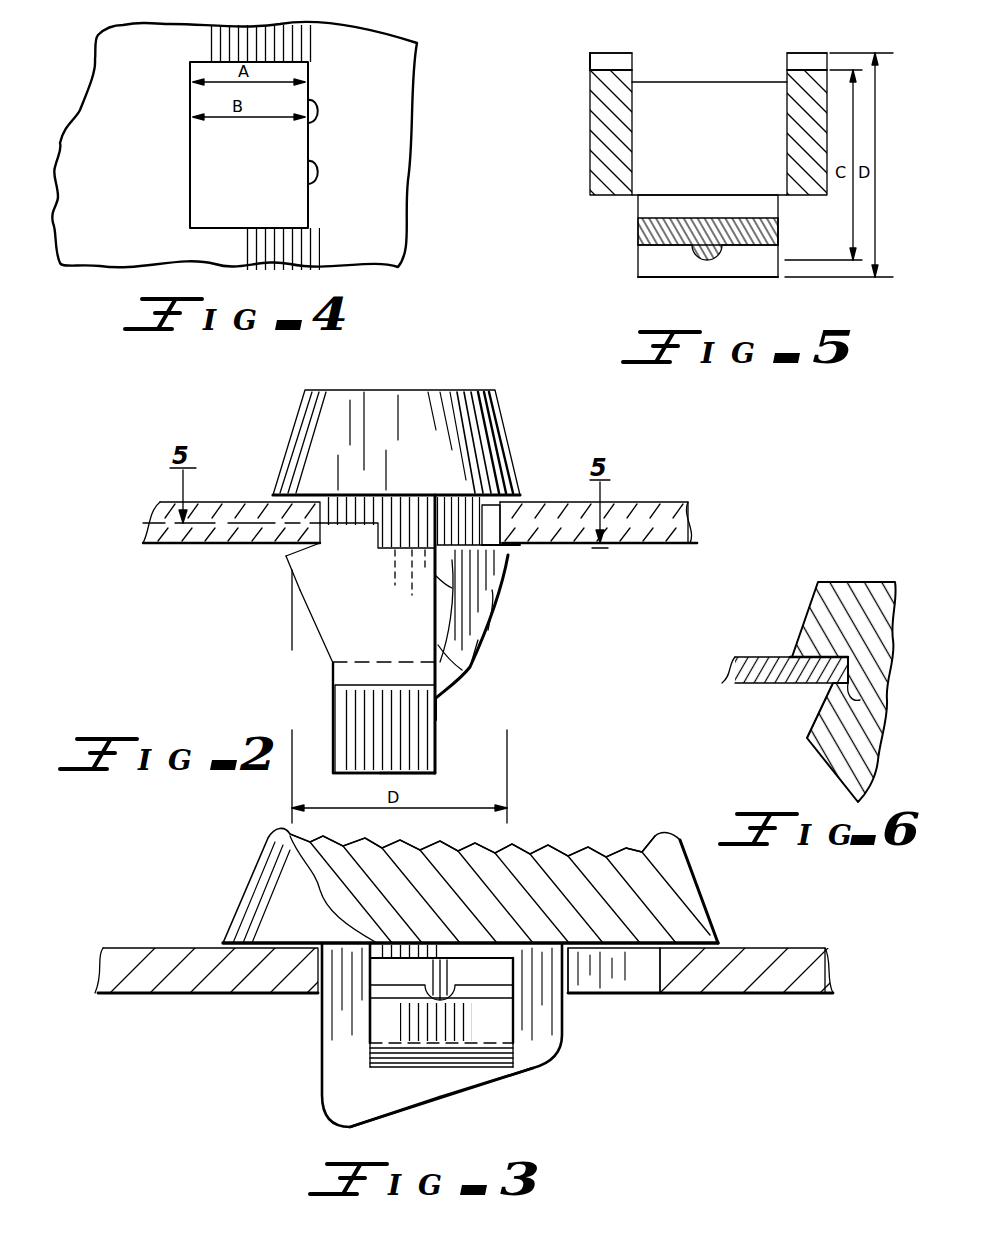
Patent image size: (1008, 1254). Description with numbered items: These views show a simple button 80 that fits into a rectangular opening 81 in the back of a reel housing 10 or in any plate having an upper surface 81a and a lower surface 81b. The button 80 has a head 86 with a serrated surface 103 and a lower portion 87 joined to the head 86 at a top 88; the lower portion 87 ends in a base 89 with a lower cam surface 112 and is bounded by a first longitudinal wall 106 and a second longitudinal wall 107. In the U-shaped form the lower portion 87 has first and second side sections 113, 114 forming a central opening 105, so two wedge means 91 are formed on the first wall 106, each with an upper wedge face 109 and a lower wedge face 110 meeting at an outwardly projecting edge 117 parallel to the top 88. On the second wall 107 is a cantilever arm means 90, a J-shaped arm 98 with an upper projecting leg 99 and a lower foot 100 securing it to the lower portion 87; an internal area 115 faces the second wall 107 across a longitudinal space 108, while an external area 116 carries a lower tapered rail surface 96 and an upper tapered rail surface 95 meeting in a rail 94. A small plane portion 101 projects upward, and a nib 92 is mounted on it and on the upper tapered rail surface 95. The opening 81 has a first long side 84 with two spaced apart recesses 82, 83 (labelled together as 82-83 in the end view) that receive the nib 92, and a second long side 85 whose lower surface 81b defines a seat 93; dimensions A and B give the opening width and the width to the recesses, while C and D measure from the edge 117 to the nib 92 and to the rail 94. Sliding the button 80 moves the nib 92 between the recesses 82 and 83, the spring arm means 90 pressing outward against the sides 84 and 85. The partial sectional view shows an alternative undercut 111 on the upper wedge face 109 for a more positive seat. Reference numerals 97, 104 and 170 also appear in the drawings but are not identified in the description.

In FIG. 3, the housing 10 is at (368, 1040).
In FIG. 2, the button 80 is at (476, 388).
In FIG. 3, the button 80 is at (226, 912).
In FIG. 4, the rectangular opening 81 is at (255, 147).
In FIG. 3, the rectangular opening 81 is at (643, 985).
In FIG. 4, the upper surface 81a is at (234, 144).
In FIG. 2, the upper surface 81a is at (676, 497).
In FIG. 3, the upper surface 81a is at (758, 948).
In FIG. 2, the lower surface 81b is at (684, 548).
In FIG. 3, the lower surface 81b is at (748, 996).
In FIG. 4, the recess 82 is at (312, 108).
In FIG. 4, the recess 83 is at (314, 170).
In FIG. 2, the spaced apart recesses 82-83 is at (505, 530).
In FIG. 4, the first long side 84 is at (306, 148).
In FIG. 2, the first long side 84 is at (320, 505).
In FIG. 4, the second long side 85 is at (192, 153).
In FIG. 6, the second long side 85 is at (842, 676).
In FIG. 2, the head 86 is at (498, 403).
In FIG. 6, the head 86 is at (872, 592).
In FIG. 3, the head 86 is at (698, 862).
In FIG. 2, the lower portion 87 is at (345, 674).
In FIG. 2, the top 88 is at (300, 490).
In FIG. 3, the top 88 is at (383, 889).
In FIG. 2, the base 89 is at (440, 743).
In FIG. 3, the base 89 is at (418, 1097).
In FIG. 5, the cantilever arm means 90 is at (646, 232).
In FIG. 2, the cantilever arm means 90 is at (476, 605).
In FIG. 5, the wedge means 91 is at (620, 62).
In FIG. 2, the wedge means 91 is at (328, 617).
In FIG. 5, the nib 92 is at (712, 260).
In FIG. 2, the nib 92 is at (530, 515).
In FIG. 3, the nib 92 is at (456, 978).
In FIG. 2, the seat 93 is at (300, 548).
In FIG. 6, the seat 93 is at (840, 684).
In FIG. 5, the rail 94 is at (662, 280).
In FIG. 2, the rail 94 is at (510, 565).
In FIG. 3, the rail 94 is at (500, 1002).
In FIG. 2, the upper tapered rail surface 95 is at (500, 548).
In FIG. 3, the upper tapered rail surface 95 is at (458, 998).
In FIG. 2, the lower tapered rail surface 96 is at (482, 598).
In FIG. 2, the leg portion 97 is at (468, 668).
In FIG. 2, the J-shaped arm 98 is at (480, 640).
In FIG. 2, the upper projecting leg 99 is at (446, 590).
In FIG. 2, the lower foot 100 is at (442, 700).
In FIG. 5, the plane portion 101 is at (652, 252).
In FIG. 2, the plane portion 101 is at (432, 562).
In FIG. 3, the plane portion 101 is at (441, 994).
In FIG. 3, the serrated surface 103 is at (572, 850).
In FIG. 5, the leg upper portion 104 is at (776, 230).
In FIG. 2, the leg upper portion 104 is at (440, 545).
In FIG. 5, the central opening 105 is at (709, 138).
In FIG. 3, the central opening 105 is at (525, 1055).
In FIG. 2, the first longitudinal wall 106 is at (336, 715).
In FIG. 2, the second longitudinal wall 107 is at (440, 770).
In FIG. 5, the longitudinal space 108 is at (652, 204).
In FIG. 2, the longitudinal space 108 is at (465, 680).
In FIG. 2, the upper wedge face 109 is at (300, 548).
In FIG. 6, the upper wedge face 109 is at (818, 718).
In FIG. 2, the lower wedge face 110 is at (308, 608).
In FIG. 6, the undercut 111 is at (860, 703).
In FIG. 2, the lower cam surface 112 is at (358, 773).
In FIG. 3, the lower cam surface 112 is at (458, 1095).
In FIG. 5, the first side section 113 is at (812, 192).
In FIG. 3, the first side section 113 is at (566, 1012).
In FIG. 5, the second side section 114 is at (598, 134).
In FIG. 3, the second side section 114 is at (330, 1027).
In FIG. 2, the internal area 115 is at (440, 610).
In FIG. 2, the external area 116 is at (486, 620).
In FIG. 5, the outwardly projecting edge 117 is at (612, 52).
In FIG. 2, the outwardly projecting edge 117 is at (298, 560).
In FIG. 5, the shoulder surface 170 is at (598, 61).
In FIG. 2, the shoulder surface 170 is at (300, 543).